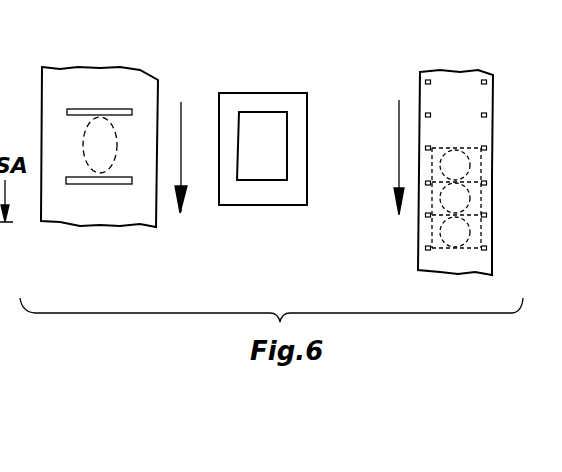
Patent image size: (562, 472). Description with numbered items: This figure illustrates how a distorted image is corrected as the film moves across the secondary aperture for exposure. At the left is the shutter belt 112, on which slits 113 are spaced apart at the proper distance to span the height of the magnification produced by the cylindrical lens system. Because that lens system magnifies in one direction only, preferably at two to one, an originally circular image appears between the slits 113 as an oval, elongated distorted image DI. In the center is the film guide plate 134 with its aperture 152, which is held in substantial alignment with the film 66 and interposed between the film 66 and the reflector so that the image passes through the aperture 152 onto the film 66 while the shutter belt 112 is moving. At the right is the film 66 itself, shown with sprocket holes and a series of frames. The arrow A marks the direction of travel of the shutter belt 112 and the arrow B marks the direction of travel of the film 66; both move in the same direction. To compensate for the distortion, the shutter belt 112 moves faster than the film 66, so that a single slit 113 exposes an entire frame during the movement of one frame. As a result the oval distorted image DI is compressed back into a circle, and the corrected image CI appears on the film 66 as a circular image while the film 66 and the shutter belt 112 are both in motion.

The shutter belt 112 is at (133, 83).
The slits 113 is at (85, 109).
The film guide plate 134 is at (300, 100).
The aperture 152 is at (283, 163).
The film 66 is at (468, 100).
The distorted image DI is at (107, 153).
The corrected image CI is at (457, 167).
The arrow indicating shutter belt movement A is at (177, 160).
The arrow indicating film movement B is at (399, 157).